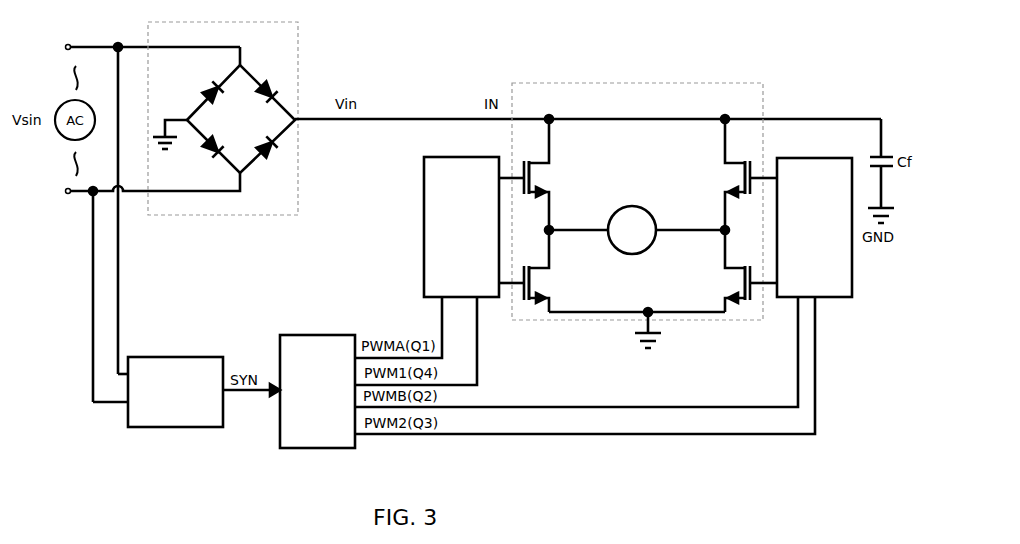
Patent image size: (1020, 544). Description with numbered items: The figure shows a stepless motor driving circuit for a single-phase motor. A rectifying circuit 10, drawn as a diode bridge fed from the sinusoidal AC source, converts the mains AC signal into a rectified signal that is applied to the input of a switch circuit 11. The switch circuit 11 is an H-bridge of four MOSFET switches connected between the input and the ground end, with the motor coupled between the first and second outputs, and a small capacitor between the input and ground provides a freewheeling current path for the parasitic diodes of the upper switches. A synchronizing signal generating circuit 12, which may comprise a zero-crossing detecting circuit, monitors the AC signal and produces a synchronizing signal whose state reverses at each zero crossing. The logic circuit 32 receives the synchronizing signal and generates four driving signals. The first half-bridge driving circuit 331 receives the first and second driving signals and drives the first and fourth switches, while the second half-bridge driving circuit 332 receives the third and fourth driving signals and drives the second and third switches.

The rectifying circuit 10 is at (298, 34).
The switch circuit 11 is at (762, 83).
The synchronizing signal generating circuit 12 is at (183, 357).
The logic circuit 32 is at (333, 335).
The first half-bridge driving circuit 331 is at (424, 270).
The second half-bridge driving circuit 332 is at (874, 288).